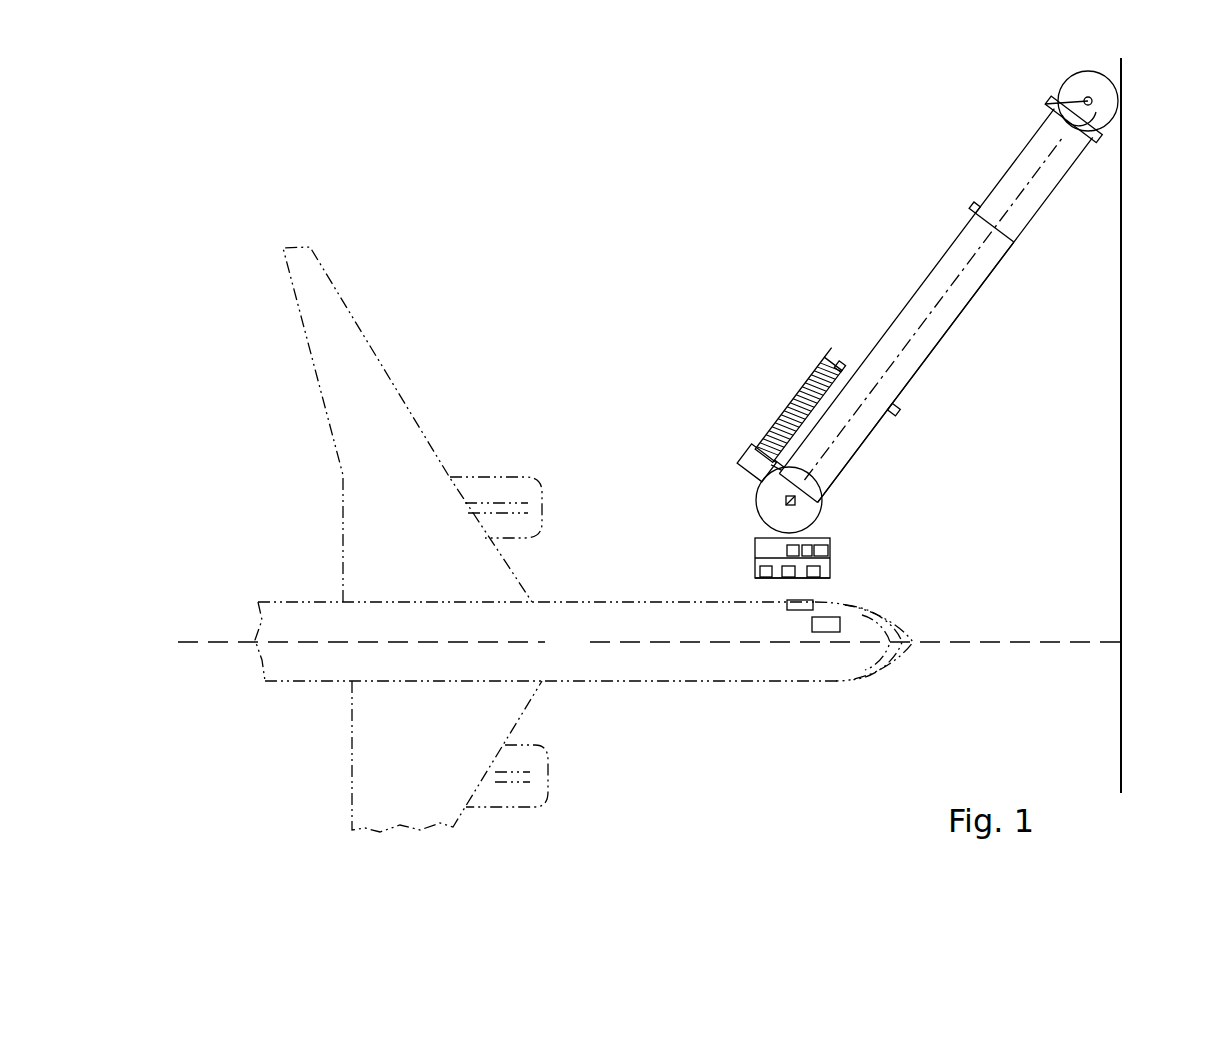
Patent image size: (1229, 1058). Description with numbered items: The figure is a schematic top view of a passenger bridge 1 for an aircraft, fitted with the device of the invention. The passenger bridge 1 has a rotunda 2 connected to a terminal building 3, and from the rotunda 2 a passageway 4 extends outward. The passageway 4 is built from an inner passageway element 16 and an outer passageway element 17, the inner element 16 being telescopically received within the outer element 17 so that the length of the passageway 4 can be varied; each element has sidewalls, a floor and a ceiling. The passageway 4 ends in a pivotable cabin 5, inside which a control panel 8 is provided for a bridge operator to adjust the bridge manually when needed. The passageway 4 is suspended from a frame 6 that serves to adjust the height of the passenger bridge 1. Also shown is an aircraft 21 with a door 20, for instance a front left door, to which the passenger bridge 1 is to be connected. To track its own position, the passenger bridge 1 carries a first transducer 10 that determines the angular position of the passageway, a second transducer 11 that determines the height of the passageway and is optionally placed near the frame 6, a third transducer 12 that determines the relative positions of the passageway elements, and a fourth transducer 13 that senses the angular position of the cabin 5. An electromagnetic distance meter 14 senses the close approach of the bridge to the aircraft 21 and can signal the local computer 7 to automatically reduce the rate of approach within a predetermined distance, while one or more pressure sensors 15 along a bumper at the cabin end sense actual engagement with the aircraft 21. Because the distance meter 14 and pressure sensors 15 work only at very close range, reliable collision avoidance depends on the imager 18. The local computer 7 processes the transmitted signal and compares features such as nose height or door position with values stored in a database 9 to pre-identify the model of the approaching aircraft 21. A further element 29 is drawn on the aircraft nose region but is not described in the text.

The passenger bridge 1 is at (892, 297).
The rotunda 2 is at (1100, 84).
The terminal building 3 is at (1200, 706).
The passageway 4 is at (865, 440).
The pivotable cabin 5 is at (843, 490).
The frame 6 is at (898, 411).
The local computer 7 is at (830, 552).
The control panel 8 is at (828, 540).
The database 9 is at (775, 545).
The first transducer 10 is at (1084, 97).
The second transducer 11 is at (1100, 110).
The third transducer 12 is at (976, 213).
The fourth transducer 13 is at (786, 500).
The electromagnetic distance meter 14 is at (758, 574).
The pressure sensors 15 is at (830, 569).
The inner passageway element 16 is at (1021, 152).
The outer passageway element 17 is at (939, 261).
The imager 18 is at (820, 580).
The door 20 is at (796, 605).
The aircraft 21 is at (580, 650).
The nose receiver unit 29 is at (822, 632).